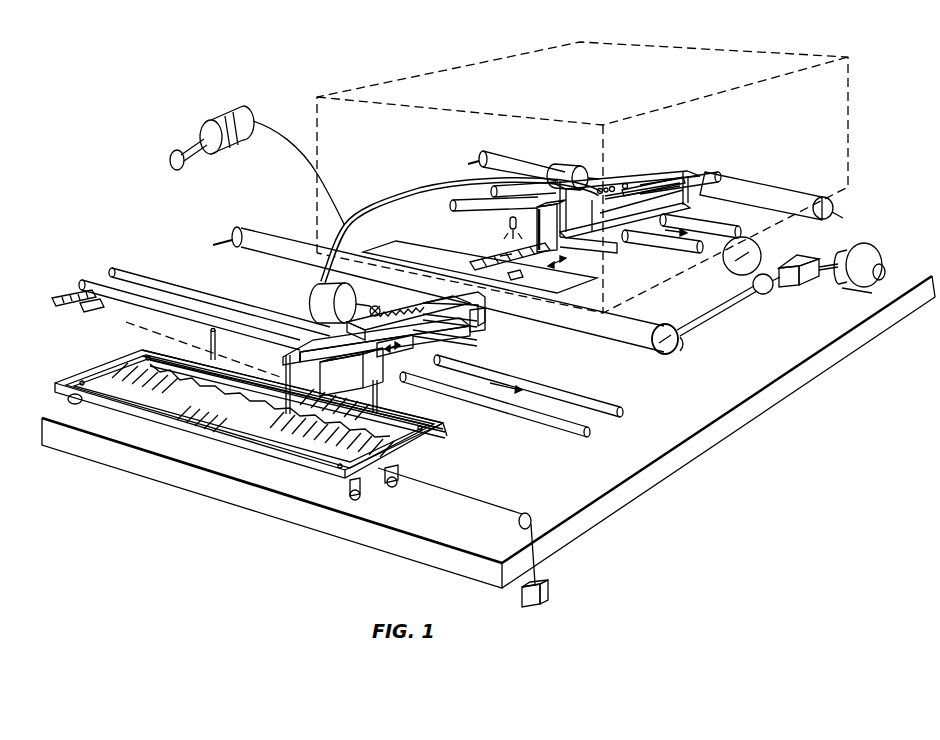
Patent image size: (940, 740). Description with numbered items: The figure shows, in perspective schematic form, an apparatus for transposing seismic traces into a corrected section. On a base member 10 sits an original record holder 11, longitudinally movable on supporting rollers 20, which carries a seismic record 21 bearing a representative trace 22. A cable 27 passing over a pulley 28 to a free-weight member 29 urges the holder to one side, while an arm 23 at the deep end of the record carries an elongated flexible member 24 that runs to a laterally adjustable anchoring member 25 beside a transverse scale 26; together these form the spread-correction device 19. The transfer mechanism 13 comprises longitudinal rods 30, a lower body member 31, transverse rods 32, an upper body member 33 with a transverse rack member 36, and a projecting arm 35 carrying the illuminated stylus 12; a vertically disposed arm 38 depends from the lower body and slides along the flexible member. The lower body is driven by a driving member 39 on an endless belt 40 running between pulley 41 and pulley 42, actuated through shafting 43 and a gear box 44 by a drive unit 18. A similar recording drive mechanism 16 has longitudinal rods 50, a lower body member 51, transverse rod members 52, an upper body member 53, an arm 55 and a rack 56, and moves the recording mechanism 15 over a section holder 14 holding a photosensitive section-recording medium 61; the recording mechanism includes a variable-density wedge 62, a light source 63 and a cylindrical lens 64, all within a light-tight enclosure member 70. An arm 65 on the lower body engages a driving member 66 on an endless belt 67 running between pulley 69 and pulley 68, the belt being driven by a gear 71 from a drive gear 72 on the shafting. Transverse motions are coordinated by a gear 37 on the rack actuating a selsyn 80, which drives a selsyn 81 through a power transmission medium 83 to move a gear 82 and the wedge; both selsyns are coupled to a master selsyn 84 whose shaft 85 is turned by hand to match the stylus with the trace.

The base member 10 is at (297, 518).
The original record holder 11 is at (292, 461).
The stylus 12 is at (294, 366).
The transfer mechanism 13 is at (362, 393).
The section holder 14 is at (578, 284).
The recording mechanism 15 is at (470, 266).
The recording drive mechanism 16 is at (604, 250).
The drive unit 18 is at (860, 252).
The spread-correction device 19 is at (130, 318).
The supporting rollers 20 is at (82, 402).
The seismic record 21 is at (244, 447).
The trace 22 is at (259, 404).
The arm 23 is at (437, 430).
The elongated flexible member 24 is at (423, 421).
The anchoring member 25 is at (90, 310).
The scale 26 is at (58, 299).
The cable 27 is at (466, 494).
The pulley 28 is at (538, 518).
The free-weight member 29 is at (548, 593).
The longitudinal rods 30 is at (590, 431).
The lower body member 31 is at (448, 360).
The transverse rods 32 is at (474, 340).
The upper body member 33 is at (440, 302).
The arm 35 is at (283, 358).
The transverse rack member 36 is at (402, 303).
The gear 37 is at (374, 306).
The vertically disposed arm 38 is at (380, 396).
The driving member 39 is at (478, 322).
The endless belt 40 is at (607, 339).
The pulley 41 is at (227, 231).
The pulley 42 is at (662, 356).
The shafting 43 is at (720, 306).
The gear box 44 is at (814, 276).
The longitudinal rods 50 is at (690, 248).
The lower body member 51 is at (684, 220).
The transverse rod members 52 is at (661, 188).
The upper body member 53 is at (639, 189).
The arm 55 is at (552, 240).
The rack 56 is at (613, 184).
The section-recording medium 61 is at (570, 268).
The variable-density wedge 62 is at (500, 256).
The light source 63 is at (509, 233).
The cylindrical lens 64 is at (519, 278).
The arm 65 is at (710, 172).
The driving member 66 is at (721, 181).
The endless belt 67 is at (791, 200).
The pulley 68 is at (480, 156).
The pulley 69 is at (845, 203).
The light-tight enclosure member 70 is at (441, 78).
The gear 71 is at (733, 270).
The drive gear 72 is at (771, 291).
The selsyn 80 is at (307, 293).
The selsyn 81 is at (568, 166).
The gear 82 is at (600, 187).
The power transmission medium 83 is at (416, 206).
The master selsyn 84 is at (222, 118).
The shaft 85 is at (187, 141).